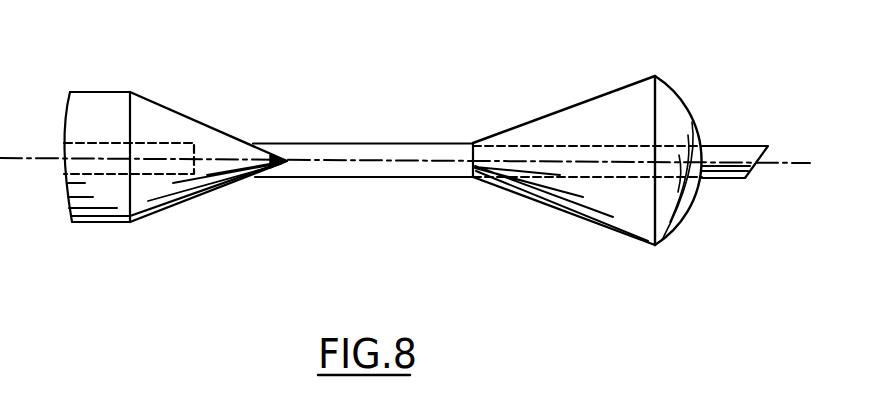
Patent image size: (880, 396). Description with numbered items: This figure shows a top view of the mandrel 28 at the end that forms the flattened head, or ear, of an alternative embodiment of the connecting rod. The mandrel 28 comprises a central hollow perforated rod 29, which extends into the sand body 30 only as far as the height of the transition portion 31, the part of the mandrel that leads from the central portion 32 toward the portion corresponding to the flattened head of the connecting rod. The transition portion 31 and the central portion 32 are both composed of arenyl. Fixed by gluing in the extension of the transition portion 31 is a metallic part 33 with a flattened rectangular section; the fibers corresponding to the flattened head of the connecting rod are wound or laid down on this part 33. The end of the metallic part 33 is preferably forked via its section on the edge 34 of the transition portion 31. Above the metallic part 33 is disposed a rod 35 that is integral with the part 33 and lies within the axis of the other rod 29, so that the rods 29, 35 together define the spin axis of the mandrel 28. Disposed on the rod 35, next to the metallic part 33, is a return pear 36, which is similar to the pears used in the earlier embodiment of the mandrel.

The mandrel 28 is at (117, 234).
The central hollow perforated rod 29 is at (87, 150).
The sand body 30 is at (157, 124).
The transition portion 31 is at (215, 130).
The central portion 32 is at (118, 92).
The metallic part 33 is at (412, 168).
The edge of the transition portion 34 is at (287, 163).
The rod 35 is at (743, 153).
The return pear 36 is at (582, 198).